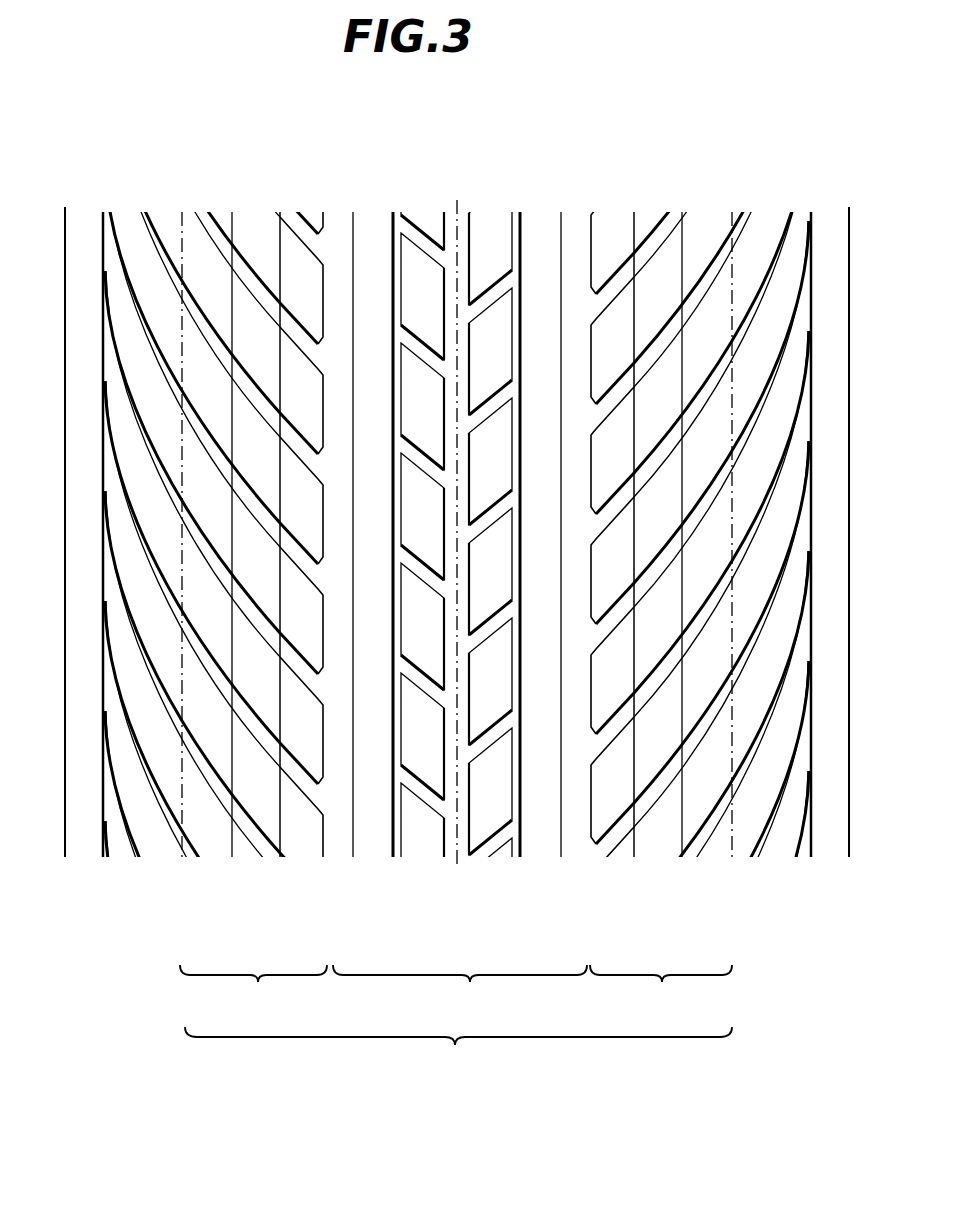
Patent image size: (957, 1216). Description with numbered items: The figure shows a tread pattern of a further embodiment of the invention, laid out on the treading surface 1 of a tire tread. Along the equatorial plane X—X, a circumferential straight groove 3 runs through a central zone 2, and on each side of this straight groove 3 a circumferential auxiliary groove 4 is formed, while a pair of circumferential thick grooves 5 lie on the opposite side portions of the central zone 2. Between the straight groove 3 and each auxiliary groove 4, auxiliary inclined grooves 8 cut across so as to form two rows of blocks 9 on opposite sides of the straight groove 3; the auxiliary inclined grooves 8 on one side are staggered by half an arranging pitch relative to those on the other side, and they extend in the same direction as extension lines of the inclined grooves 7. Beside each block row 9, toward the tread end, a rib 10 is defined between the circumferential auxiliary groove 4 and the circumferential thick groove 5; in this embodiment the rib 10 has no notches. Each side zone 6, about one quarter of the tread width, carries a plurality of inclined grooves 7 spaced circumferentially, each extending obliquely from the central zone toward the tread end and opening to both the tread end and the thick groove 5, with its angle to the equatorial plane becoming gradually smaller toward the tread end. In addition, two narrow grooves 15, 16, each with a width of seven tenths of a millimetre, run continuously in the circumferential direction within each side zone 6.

The treading surface 1 is at (458, 1052).
The central zone 2 is at (460, 559).
The circumferential straight groove 3 is at (465, 217).
The circumferential auxiliary groove 4 is at (520, 217).
The circumferential thick groove 5 is at (577, 212).
The side zone 6 is at (457, 608).
The inclined groove 7 is at (660, 545).
The auxiliary inclined groove 8 is at (418, 735).
The block row 9 is at (490, 224).
The rib 10 is at (540, 228).
The narrow groove 15 is at (640, 828).
The narrow groove 16 is at (670, 835).